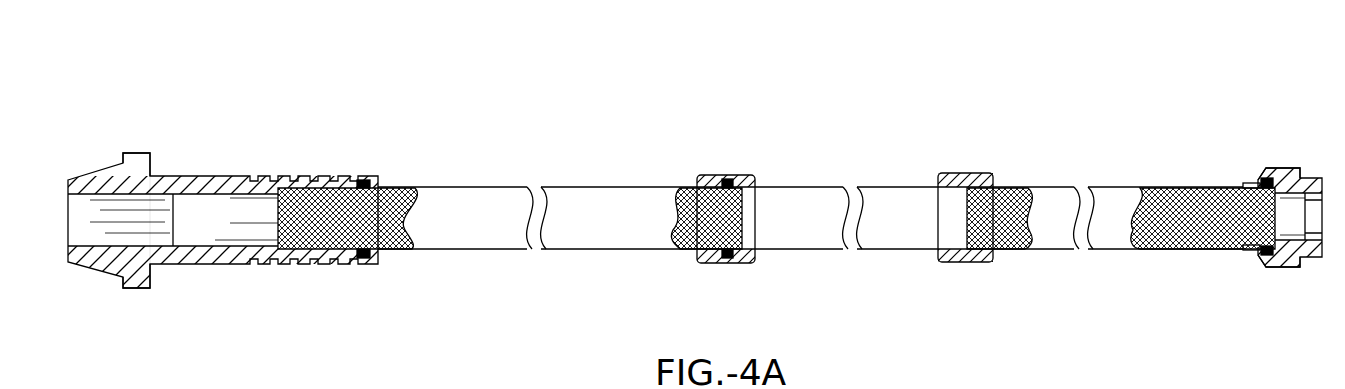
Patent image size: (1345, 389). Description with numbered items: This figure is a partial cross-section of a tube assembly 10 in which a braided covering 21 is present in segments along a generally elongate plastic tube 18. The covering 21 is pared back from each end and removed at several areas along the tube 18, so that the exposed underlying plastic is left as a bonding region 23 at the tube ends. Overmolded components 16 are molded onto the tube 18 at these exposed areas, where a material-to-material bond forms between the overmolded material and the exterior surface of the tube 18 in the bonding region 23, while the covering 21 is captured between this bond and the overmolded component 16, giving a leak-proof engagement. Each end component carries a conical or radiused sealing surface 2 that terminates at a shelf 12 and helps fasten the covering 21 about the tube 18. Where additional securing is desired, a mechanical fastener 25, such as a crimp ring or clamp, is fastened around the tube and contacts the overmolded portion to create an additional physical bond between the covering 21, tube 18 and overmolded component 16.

The tube assembly 10 is at (966, 117).
The sealing surface 2 is at (695, 208).
The shelf 12 is at (137, 153).
The overmolded component 16 is at (196, 268).
The tube 18 is at (487, 188).
The covering 21 is at (388, 252).
The bonding region 23 is at (249, 230).
The mechanical fastener 25 is at (362, 180).